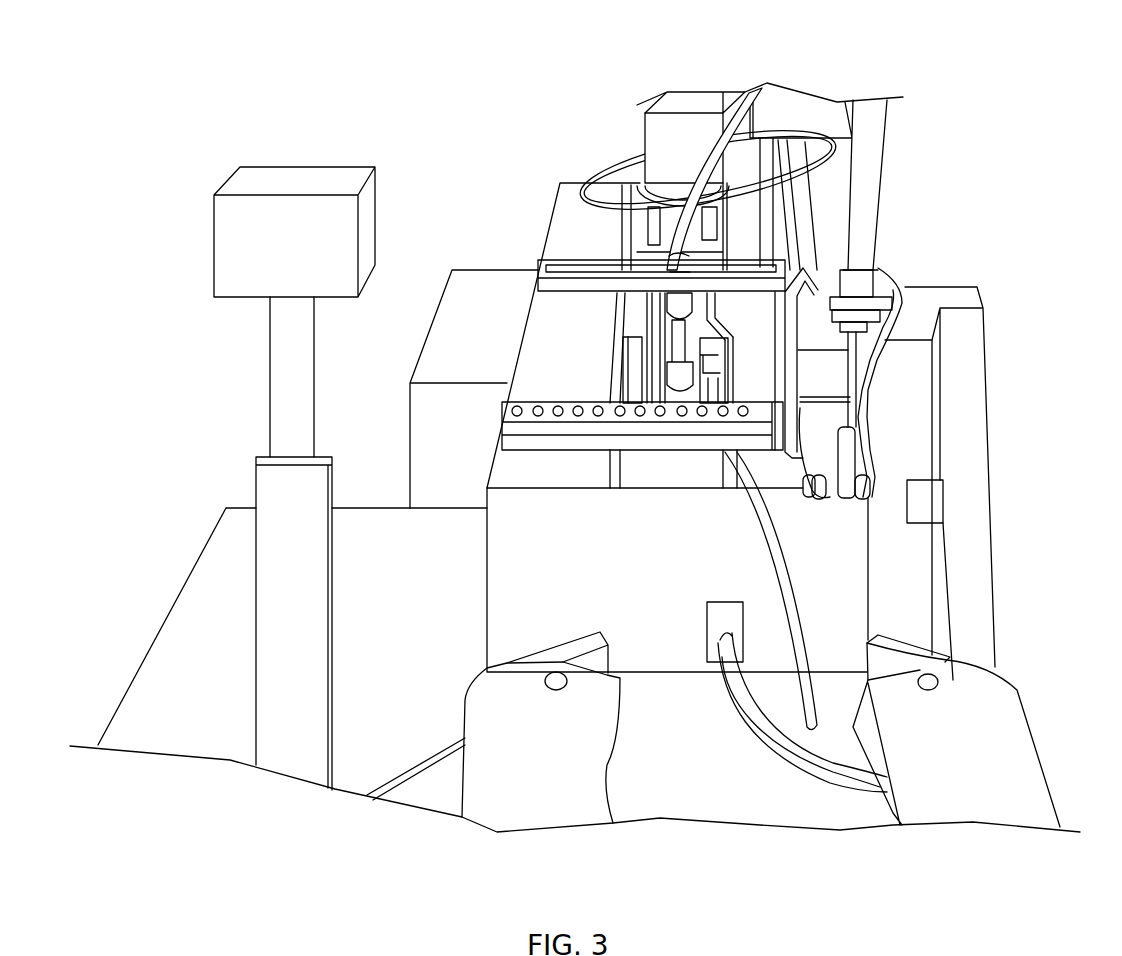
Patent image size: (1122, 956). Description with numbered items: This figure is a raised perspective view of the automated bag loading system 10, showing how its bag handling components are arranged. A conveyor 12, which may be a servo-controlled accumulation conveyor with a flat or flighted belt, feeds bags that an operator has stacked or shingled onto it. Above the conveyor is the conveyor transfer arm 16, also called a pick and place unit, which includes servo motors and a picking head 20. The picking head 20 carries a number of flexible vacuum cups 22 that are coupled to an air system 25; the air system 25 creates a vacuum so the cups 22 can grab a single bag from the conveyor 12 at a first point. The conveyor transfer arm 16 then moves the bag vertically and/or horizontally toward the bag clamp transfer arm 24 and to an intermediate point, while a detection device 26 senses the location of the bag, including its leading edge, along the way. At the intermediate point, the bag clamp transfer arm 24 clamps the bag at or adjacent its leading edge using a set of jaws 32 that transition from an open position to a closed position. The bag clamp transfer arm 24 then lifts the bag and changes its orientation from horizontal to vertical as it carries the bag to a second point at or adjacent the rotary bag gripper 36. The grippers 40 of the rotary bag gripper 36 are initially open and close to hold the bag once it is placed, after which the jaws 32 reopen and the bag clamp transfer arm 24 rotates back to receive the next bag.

The automated bag loading system 10 is at (963, 131).
The conveyor 12 is at (642, 308).
The conveyor transfer arm 16 is at (673, 138).
The picking head 20 is at (655, 230).
The flexible vacuum cups 22 is at (678, 382).
The bag clamp transfer arm 24 is at (518, 430).
The air system 25 is at (600, 170).
The detection device 26 is at (321, 223).
The jaws 32 is at (893, 277).
The rotary bag gripper 36 is at (987, 738).
The grippers 40 is at (563, 652).